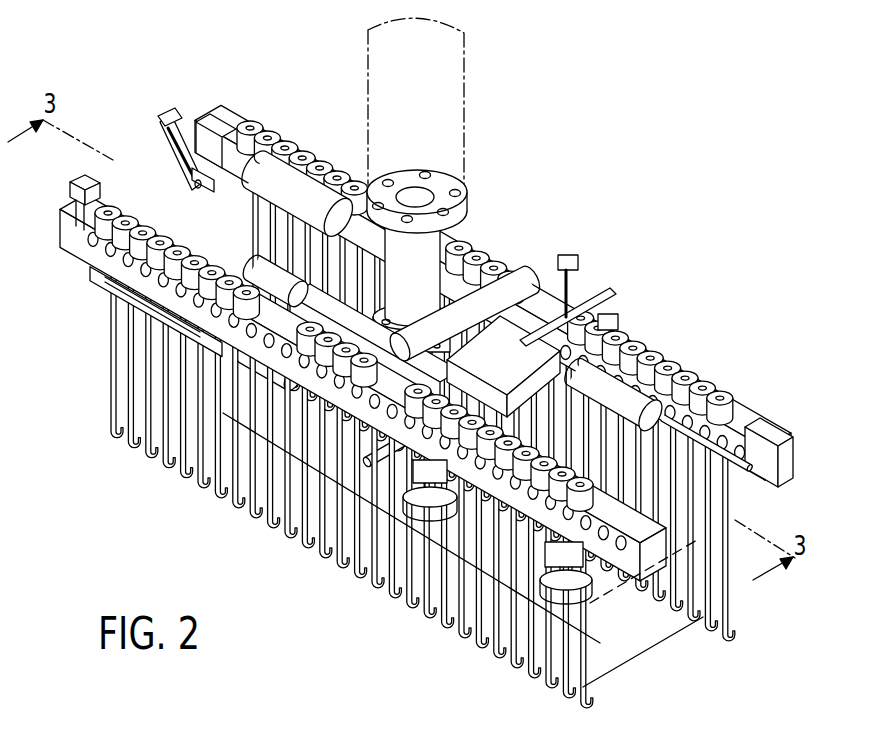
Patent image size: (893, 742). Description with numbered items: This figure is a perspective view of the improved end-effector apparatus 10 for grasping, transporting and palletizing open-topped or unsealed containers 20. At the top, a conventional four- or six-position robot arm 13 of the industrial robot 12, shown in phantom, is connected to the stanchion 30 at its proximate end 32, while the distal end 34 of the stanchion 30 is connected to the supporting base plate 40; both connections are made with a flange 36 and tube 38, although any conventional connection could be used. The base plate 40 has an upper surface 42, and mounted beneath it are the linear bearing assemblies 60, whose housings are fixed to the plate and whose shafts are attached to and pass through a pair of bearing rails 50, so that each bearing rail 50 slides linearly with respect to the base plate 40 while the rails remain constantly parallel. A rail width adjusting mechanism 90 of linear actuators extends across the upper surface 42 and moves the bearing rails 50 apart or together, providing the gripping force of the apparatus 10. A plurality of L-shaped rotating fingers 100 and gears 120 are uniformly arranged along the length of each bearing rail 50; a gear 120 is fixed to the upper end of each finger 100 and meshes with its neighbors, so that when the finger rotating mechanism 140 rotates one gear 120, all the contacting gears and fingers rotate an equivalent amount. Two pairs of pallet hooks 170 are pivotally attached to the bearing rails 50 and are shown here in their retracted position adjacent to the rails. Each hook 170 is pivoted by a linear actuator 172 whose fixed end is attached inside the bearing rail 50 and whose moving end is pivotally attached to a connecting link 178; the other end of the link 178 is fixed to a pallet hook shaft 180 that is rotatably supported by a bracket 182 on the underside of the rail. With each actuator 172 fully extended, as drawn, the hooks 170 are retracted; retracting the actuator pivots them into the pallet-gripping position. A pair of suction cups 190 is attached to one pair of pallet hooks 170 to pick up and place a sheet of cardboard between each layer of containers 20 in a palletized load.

The end-effector apparatus 10 is at (95, 105).
The industrial robot 12 is at (455, 16).
The robot arm 13 is at (368, 73).
The containers 20 is at (635, 6).
The stanchion 30 is at (523, 300).
The proximate end 32 is at (467, 203).
The distal end 34 is at (368, 192).
The flange 36 is at (443, 185).
The tube 38 is at (470, 232).
The supporting base plate 40 is at (618, 324).
The upper surface 42 is at (580, 280).
The bearing rails 50 is at (217, 127).
The linear bearing assemblies 60 is at (320, 330).
The rail width adjusting mechanism 90 is at (270, 158).
The L-shaped rotating fingers 100 is at (110, 413).
The gears 120 is at (80, 200).
The finger rotating mechanism 140 is at (240, 350).
The pallet hooks 170 is at (97, 287).
The linear actuator 172 is at (237, 250).
The connecting link 178 is at (170, 146).
The pallet hook shaft 180 is at (207, 137).
The bracket 182 is at (207, 176).
The suction cups 190 is at (590, 597).